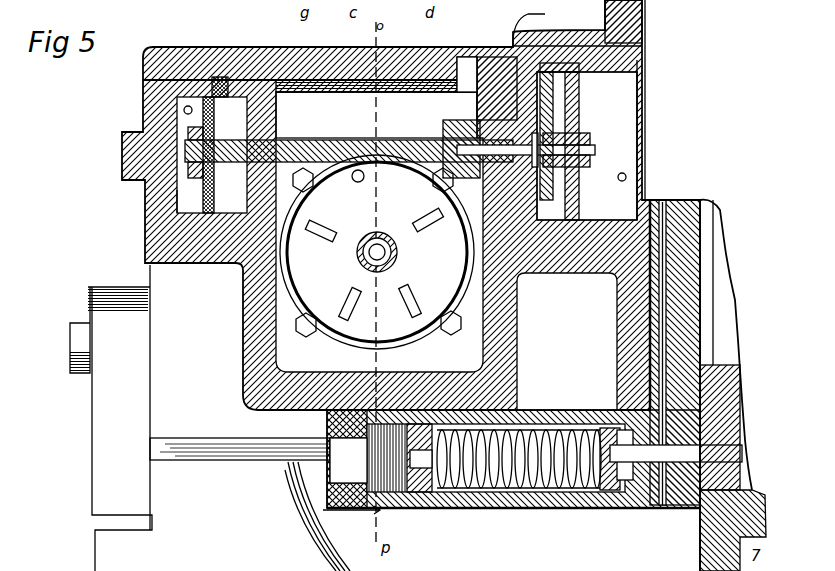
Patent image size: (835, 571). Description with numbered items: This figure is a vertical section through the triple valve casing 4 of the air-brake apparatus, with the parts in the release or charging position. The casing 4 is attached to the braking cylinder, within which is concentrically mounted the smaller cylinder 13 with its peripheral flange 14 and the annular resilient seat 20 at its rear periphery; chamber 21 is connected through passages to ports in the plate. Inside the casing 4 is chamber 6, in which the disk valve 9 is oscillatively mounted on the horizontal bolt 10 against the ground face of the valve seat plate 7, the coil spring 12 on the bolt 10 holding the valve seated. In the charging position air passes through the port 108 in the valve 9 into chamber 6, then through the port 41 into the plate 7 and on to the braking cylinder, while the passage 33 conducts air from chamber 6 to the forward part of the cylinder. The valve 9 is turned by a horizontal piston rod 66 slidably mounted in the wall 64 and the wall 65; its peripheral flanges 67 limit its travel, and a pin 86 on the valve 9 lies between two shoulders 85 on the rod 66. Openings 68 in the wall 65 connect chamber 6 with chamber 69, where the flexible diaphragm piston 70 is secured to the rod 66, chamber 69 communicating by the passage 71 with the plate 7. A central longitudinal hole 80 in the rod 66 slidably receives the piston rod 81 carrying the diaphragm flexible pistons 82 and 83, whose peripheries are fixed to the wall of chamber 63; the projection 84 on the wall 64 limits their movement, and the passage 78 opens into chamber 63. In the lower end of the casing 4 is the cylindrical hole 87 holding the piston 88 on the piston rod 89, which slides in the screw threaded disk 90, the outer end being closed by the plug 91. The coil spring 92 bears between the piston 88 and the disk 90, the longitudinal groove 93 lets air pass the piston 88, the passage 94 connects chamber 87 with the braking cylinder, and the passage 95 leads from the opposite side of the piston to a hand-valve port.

The triple valve casing 4 is at (226, 48).
The chamber 6 is at (376, 109).
The valve seat plate 7 is at (427, 330).
The disk valve 9 is at (383, 230).
The horizontal bolt 10 is at (386, 240).
The coil spring 12 is at (361, 253).
The smaller cylinder 13 is at (740, 380).
The peripheral flange 14 is at (655, 535).
The annular resilient seat 20 is at (712, 278).
The chamber 21 is at (737, 290).
The passage 33 is at (592, 45).
The port 41 is at (412, 296).
The chamber 63 is at (587, 146).
The wall 64 is at (492, 105).
The wall 65 is at (236, 130).
The horizontal piston rod 66 is at (428, 138).
The peripheral flange 67 is at (452, 120).
The opening 68 is at (288, 98).
The chamber 69 is at (185, 198).
The flexible diaphragm piston 70 is at (214, 178).
The passage 71 is at (182, 110).
The passage 78 is at (626, 176).
The central longitudinal hole 80 is at (428, 215).
The piston rod 81 is at (478, 172).
The diaphragm flexible piston 82 is at (534, 26).
The diaphragm flexible piston 83 is at (580, 110).
The projection 84 is at (468, 58).
The shoulder 85 is at (357, 170).
The pin 86 is at (331, 216).
The cylindrical hole 87 is at (507, 498).
The piston 88 is at (608, 408).
The piston rod 89 is at (550, 498).
The screw threaded disk 90 is at (425, 510).
The plug 91 is at (330, 430).
The coil spring 92 is at (558, 432).
The longitudinal groove 93 is at (595, 498).
The passage 94 is at (676, 453).
The passage 95 is at (575, 406).
The port 108 is at (347, 320).